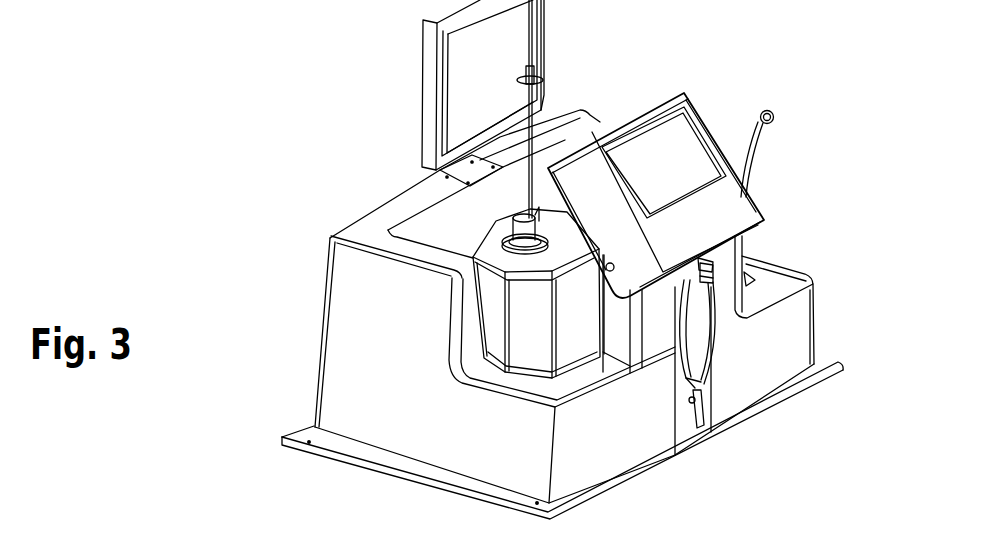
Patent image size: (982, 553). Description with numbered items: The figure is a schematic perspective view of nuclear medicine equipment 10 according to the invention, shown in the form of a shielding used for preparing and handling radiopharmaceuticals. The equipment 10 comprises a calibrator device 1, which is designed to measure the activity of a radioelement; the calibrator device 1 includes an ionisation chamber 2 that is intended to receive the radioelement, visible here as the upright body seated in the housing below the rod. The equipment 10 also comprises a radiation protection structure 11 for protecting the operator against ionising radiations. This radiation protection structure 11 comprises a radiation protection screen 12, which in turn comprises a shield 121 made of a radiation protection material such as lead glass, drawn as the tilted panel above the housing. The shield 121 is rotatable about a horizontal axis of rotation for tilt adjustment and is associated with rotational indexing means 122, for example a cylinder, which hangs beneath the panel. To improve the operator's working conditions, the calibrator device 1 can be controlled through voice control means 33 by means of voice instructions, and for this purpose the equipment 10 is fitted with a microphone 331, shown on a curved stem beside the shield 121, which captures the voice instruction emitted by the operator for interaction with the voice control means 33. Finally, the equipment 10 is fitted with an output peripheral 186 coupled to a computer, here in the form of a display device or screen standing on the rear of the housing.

The calibrator device 1 is at (558, 259).
The nuclear medicine equipment 10 is at (350, 213).
The output peripheral 186 is at (462, 65).
The ionisation chamber 2 is at (528, 345).
The radiation protection structure 11 is at (685, 163).
The radiation protection screen 12 is at (685, 163).
The shield 121 is at (665, 142).
The microphone 331 is at (809, 154).
The voice control means 33 is at (753, 148).
The rotational indexing means 122 is at (707, 335).